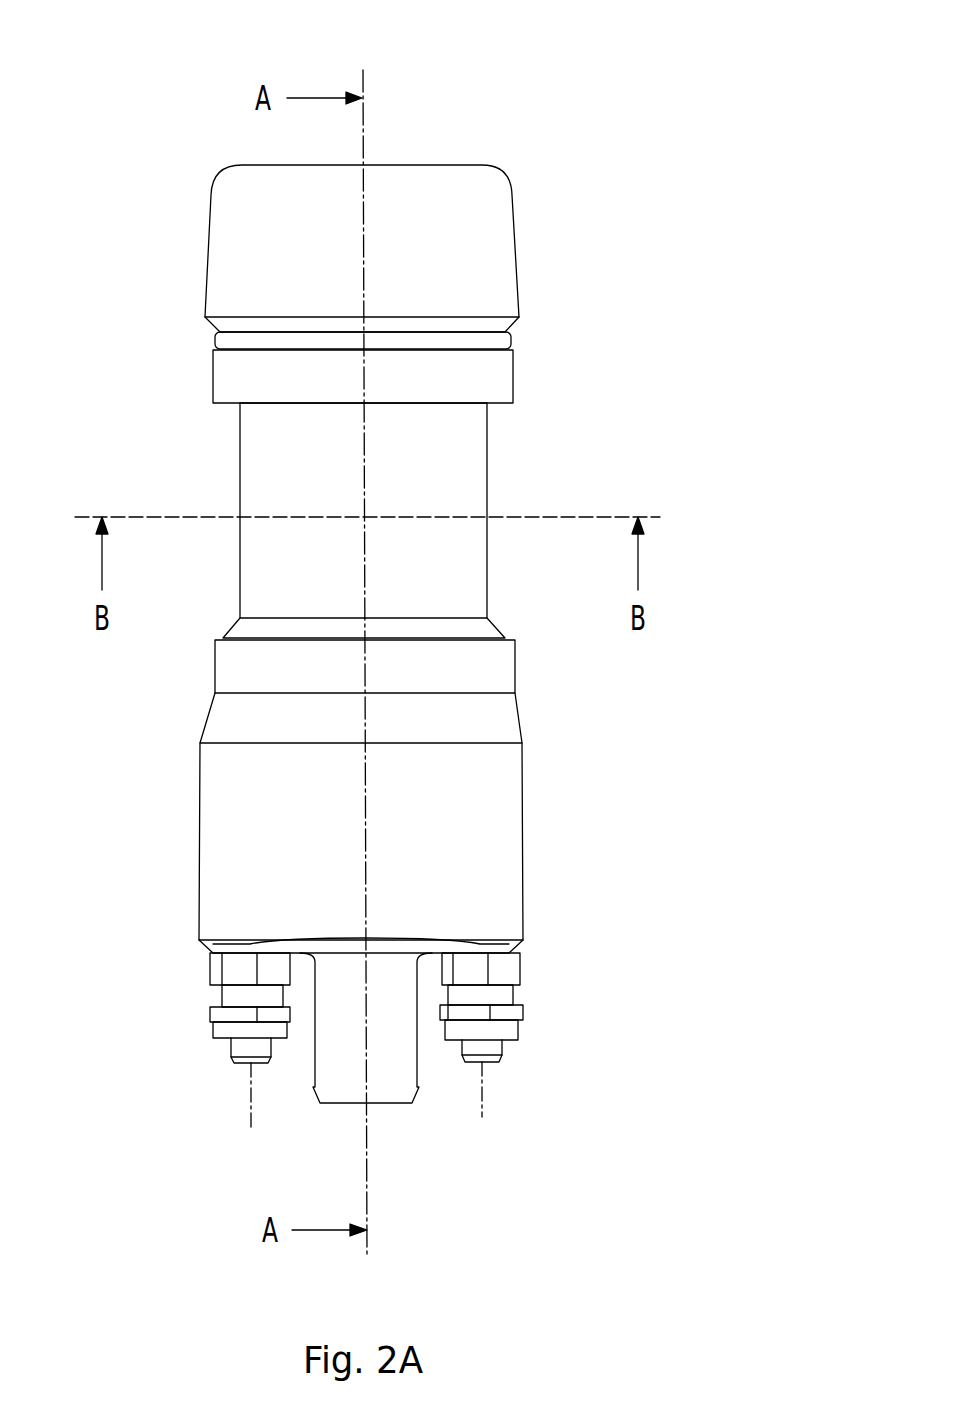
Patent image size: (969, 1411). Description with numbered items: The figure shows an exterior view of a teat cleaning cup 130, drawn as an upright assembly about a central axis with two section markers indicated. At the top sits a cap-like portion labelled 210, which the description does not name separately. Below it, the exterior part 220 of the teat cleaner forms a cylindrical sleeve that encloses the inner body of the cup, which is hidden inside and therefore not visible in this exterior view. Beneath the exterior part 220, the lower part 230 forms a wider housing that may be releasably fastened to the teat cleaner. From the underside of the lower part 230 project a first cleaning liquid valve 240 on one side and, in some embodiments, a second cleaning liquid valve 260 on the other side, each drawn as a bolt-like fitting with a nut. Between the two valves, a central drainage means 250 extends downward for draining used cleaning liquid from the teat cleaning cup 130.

The teat cleaning cup 130 is at (689, 63).
The cap 210 is at (462, 240).
The exterior part 220 is at (462, 447).
The lower part 230 is at (455, 832).
The first cleaning liquid valve 240 is at (482, 1047).
The drainage means 250 is at (400, 1095).
The second cleaning liquid valve 260 is at (245, 1047).